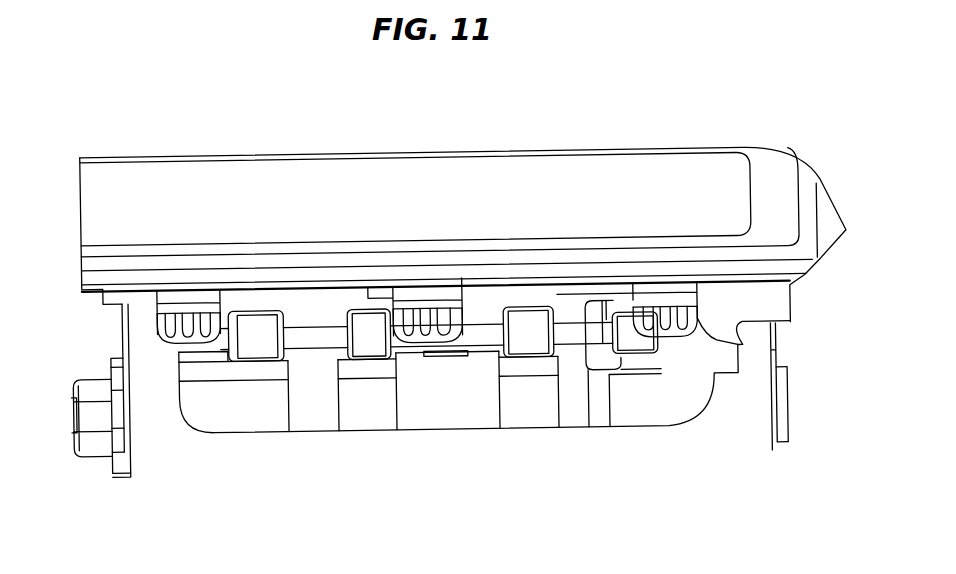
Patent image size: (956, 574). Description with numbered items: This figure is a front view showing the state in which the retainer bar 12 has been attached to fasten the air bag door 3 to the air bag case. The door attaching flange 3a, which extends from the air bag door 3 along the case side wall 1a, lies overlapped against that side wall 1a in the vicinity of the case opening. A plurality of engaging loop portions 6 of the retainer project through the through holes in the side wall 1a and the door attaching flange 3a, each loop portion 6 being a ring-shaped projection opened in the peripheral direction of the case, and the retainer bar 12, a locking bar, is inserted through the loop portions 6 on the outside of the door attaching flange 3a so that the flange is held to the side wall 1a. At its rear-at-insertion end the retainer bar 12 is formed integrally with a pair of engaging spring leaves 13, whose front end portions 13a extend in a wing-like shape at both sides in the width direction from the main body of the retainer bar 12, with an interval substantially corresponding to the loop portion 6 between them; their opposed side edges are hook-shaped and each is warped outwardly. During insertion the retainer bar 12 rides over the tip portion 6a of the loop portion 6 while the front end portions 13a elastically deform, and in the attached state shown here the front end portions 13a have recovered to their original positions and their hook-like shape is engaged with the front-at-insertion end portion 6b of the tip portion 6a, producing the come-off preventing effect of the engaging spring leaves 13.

The air bag door 3 is at (633, 165).
The door attaching flange 3a is at (438, 412).
The engaging loop portion 6 is at (259, 327).
The tip portion of the loop portion 6a is at (642, 345).
The front-at-insertion end portion 6b is at (603, 309).
The retainer bar 12 is at (483, 330).
The engaging spring leaves 13 is at (620, 306).
The front end portions 13a is at (592, 307).
The case side wall 1a is at (747, 430).